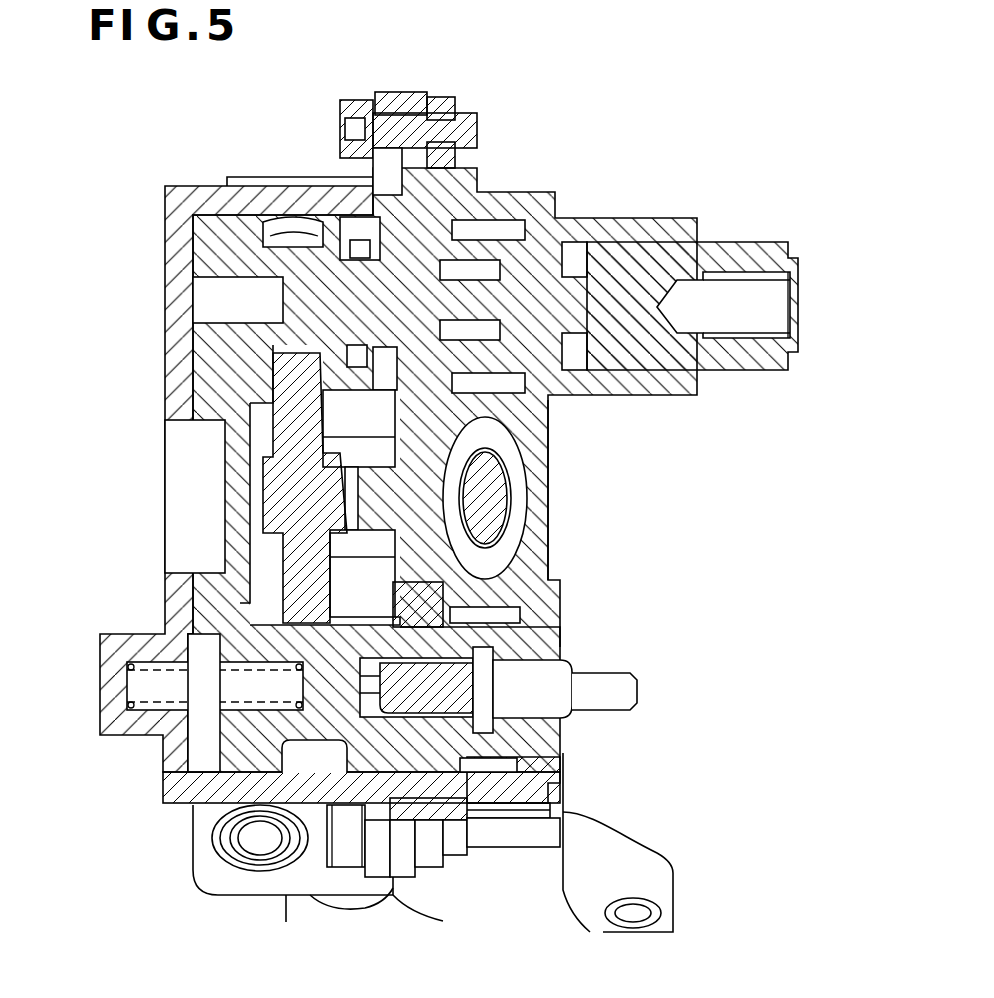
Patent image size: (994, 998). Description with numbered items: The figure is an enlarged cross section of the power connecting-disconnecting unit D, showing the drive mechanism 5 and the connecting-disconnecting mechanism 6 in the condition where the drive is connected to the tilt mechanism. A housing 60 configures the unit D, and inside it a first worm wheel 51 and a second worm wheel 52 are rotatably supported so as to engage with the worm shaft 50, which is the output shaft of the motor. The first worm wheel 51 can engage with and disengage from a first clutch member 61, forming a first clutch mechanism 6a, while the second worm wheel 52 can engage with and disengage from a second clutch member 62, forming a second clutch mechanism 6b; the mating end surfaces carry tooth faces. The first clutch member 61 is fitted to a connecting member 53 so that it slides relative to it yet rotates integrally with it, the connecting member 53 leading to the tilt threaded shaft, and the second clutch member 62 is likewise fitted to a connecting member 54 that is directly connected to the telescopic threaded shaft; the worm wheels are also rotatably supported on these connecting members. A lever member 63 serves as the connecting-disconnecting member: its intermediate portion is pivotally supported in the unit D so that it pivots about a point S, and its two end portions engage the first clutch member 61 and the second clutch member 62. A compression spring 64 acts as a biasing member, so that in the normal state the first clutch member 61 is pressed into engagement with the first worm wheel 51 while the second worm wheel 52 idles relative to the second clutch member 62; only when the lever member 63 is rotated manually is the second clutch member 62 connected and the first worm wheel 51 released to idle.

The drive mechanism 5 is at (507, 176).
The connecting-disconnecting mechanism 6 is at (383, 432).
The first clutch mechanism 6a is at (300, 760).
The second clutch mechanism 6b is at (358, 230).
The worm shaft 50 is at (492, 502).
The first worm wheel 51 is at (487, 766).
The second worm wheel 52 is at (500, 232).
The connecting member 53 is at (555, 672).
The connecting member 54 is at (740, 250).
The housing 60 is at (176, 216).
The first clutch member 61 is at (238, 748).
The second clutch member 62 is at (245, 264).
The lever member 63 is at (300, 400).
The compression spring 64 is at (147, 672).
The pivot point S is at (300, 496).
The power connecting-disconnecting unit D is at (570, 432).